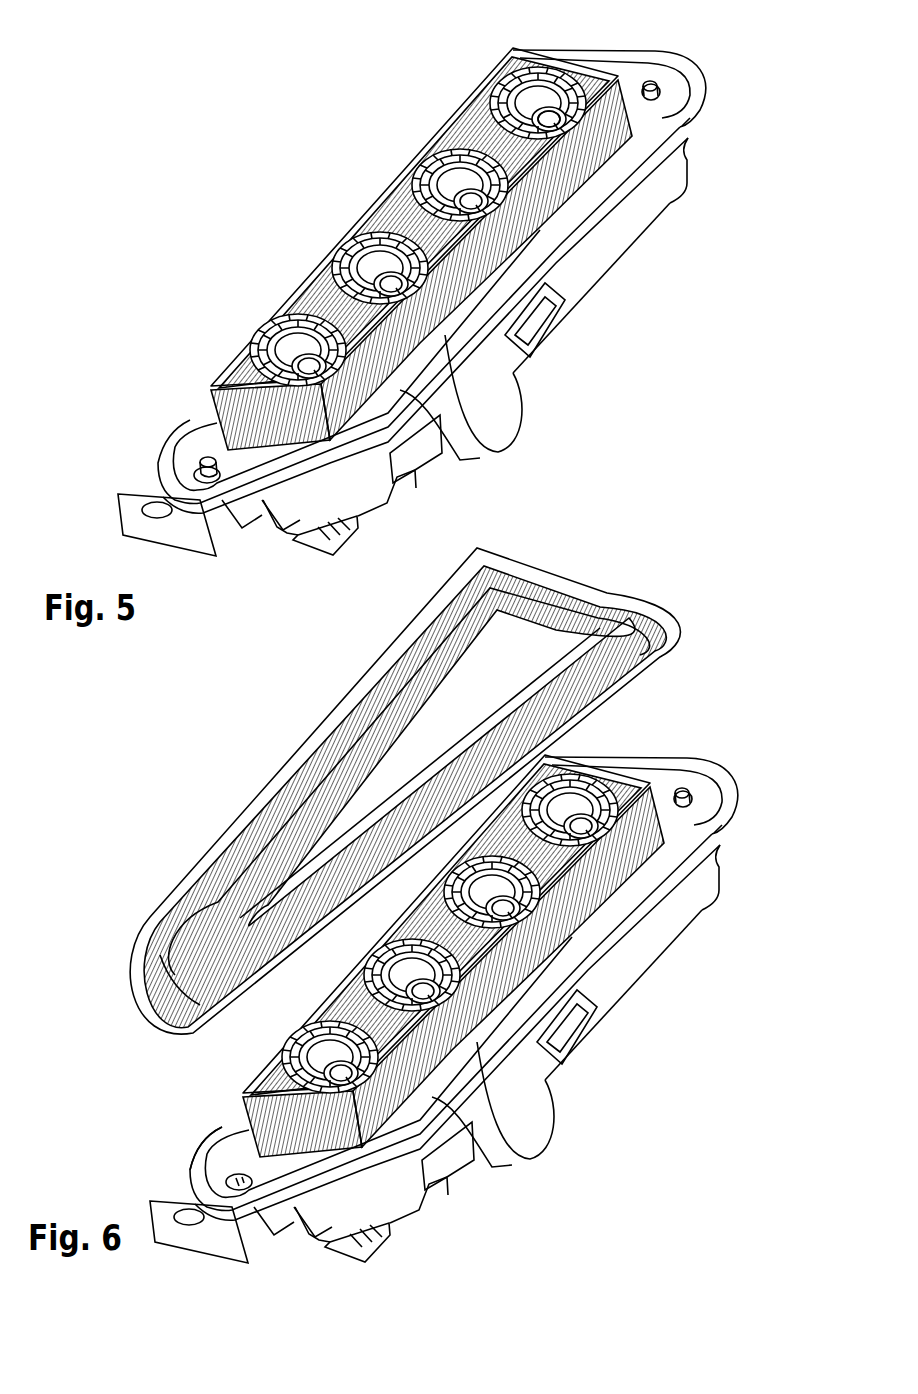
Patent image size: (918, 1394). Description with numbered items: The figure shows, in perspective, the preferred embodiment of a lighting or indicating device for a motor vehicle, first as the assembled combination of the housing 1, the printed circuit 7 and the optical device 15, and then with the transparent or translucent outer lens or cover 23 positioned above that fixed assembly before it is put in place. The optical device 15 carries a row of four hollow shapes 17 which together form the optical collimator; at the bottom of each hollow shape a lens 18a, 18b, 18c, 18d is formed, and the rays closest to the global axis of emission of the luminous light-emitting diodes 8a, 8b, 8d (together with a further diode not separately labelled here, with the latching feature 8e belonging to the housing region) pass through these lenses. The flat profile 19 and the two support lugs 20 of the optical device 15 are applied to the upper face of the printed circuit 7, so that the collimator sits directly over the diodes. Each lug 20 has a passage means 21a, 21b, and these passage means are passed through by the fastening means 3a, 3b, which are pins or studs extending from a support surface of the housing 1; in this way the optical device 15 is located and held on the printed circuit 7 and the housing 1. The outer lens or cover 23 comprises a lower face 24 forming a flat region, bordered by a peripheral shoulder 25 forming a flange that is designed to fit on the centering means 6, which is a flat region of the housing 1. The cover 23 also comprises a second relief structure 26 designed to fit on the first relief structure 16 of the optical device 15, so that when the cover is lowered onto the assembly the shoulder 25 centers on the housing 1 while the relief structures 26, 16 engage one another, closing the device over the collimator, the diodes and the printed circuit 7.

In FIG. 5, the housing 1 is at (594, 363).
In FIG. 6, the housing 1 is at (434, 1090).
In FIG. 5, the fastening means 3a is at (652, 84).
In FIG. 6, the fastening means 3a is at (688, 766).
In FIG. 5, the fastening means 3b is at (175, 437).
In FIG. 6, the fastening means 3b is at (195, 1170).
In FIG. 6, the centering means 6 is at (444, 1010).
In FIG. 5, the printed circuit 7 is at (435, 462).
In FIG. 5, the light-emitting diode 8a is at (400, 385).
In FIG. 5, the light-emitting diode 8b is at (505, 432).
In FIG. 5, the light-emitting diode 8d is at (563, 112).
In FIG. 5, the latching lug 8e is at (570, 237).
In FIG. 5, the optical device 15 is at (306, 240).
In FIG. 6, the optical device 15 is at (395, 929).
In FIG. 5, the first relief structure 16 is at (217, 433).
In FIG. 6, the first relief structure 16 is at (408, 956).
In FIG. 5, the hollow shapes 17 is at (518, 85).
In FIG. 5, the lens 18a is at (305, 365).
In FIG. 5, the lens 18b is at (383, 270).
In FIG. 5, the lens 18c is at (462, 190).
In FIG. 5, the lens 18d is at (545, 108).
In FIG. 5, the flat profile 19 is at (687, 160).
In FIG. 5, the support lugs 20 is at (620, 88).
In FIG. 5, the passage means 21a is at (214, 476).
In FIG. 5, the passage means 21b is at (684, 113).
In FIG. 6, the outer lens or cover 23 is at (558, 543).
In FIG. 6, the lower face 24 is at (650, 605).
In FIG. 6, the peripheral shoulder 25 is at (666, 660).
In FIG. 6, the second relief structure 26 is at (158, 957).